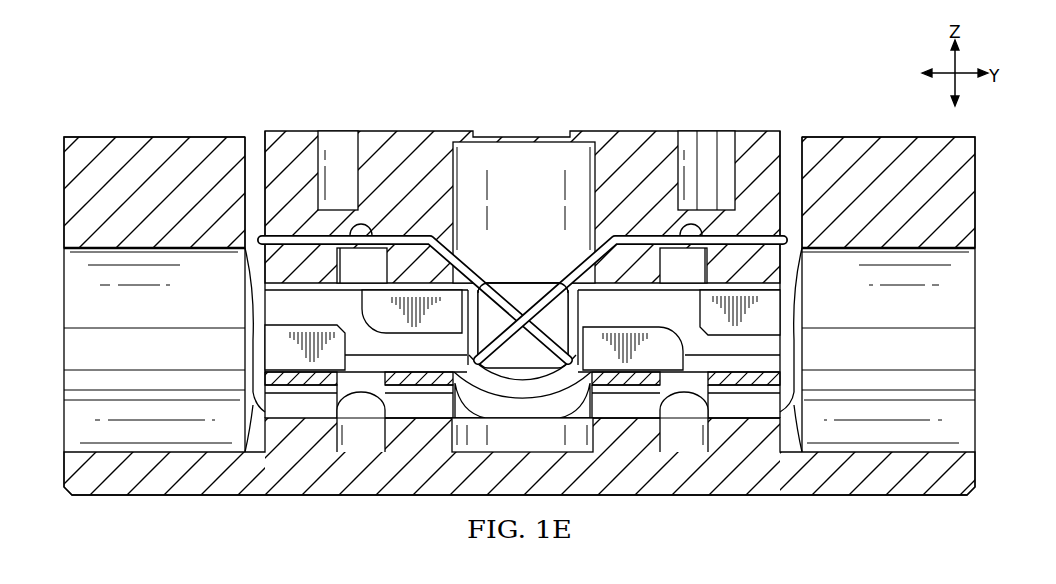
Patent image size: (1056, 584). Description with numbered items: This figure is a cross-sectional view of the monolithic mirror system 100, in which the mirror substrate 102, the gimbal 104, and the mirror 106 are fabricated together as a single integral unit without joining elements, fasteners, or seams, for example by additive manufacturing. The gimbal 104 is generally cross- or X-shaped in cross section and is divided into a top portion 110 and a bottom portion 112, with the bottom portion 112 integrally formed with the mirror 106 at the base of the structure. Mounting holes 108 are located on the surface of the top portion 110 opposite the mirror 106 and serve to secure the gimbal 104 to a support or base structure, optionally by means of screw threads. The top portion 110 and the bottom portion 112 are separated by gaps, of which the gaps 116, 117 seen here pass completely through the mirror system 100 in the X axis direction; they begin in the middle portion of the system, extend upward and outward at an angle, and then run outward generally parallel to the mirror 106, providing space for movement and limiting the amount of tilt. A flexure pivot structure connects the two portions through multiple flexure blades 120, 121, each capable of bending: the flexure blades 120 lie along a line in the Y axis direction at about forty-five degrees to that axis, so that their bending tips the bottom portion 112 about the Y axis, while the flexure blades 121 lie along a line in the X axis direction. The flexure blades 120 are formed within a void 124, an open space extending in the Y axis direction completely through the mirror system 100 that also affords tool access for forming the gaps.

The monolithic mirror system 100 is at (212, 64).
The mirror substrate 102 is at (976, 211).
The gimbal 104 is at (290, 129).
The mirror 106 is at (190, 497).
The mounting holes 108 is at (327, 138).
The top portion 110 is at (398, 137).
The bottom portion 112 is at (404, 407).
The gap 116 is at (282, 246).
The gap 117 is at (752, 243).
The flexure blades 120 is at (364, 300).
The flexure blades 121 is at (511, 300).
The void 124 is at (78, 297).